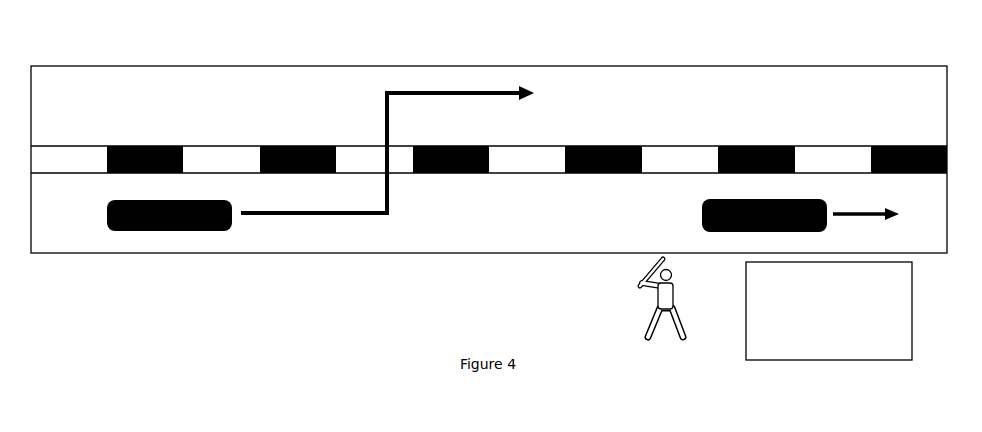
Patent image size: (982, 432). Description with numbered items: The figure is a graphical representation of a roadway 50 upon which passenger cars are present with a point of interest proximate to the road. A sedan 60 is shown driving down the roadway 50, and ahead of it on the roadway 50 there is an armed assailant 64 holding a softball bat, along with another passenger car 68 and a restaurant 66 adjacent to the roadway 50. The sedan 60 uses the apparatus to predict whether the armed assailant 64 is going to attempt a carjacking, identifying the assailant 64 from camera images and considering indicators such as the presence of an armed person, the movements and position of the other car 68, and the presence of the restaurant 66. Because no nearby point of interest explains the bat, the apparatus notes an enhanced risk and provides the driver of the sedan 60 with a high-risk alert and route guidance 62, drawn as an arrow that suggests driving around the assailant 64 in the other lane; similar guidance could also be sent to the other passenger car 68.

The roadway 50 is at (133, 86).
The sedan 60 is at (161, 233).
The route guidance 62 is at (354, 219).
The armed assailant 64 is at (663, 344).
The restaurant 66 is at (829, 367).
The passenger car 68 is at (699, 187).